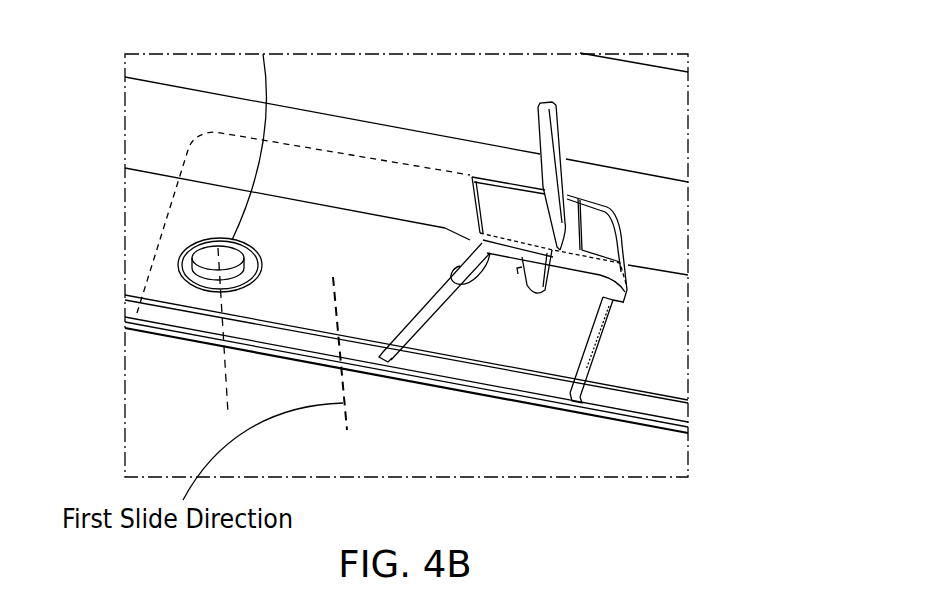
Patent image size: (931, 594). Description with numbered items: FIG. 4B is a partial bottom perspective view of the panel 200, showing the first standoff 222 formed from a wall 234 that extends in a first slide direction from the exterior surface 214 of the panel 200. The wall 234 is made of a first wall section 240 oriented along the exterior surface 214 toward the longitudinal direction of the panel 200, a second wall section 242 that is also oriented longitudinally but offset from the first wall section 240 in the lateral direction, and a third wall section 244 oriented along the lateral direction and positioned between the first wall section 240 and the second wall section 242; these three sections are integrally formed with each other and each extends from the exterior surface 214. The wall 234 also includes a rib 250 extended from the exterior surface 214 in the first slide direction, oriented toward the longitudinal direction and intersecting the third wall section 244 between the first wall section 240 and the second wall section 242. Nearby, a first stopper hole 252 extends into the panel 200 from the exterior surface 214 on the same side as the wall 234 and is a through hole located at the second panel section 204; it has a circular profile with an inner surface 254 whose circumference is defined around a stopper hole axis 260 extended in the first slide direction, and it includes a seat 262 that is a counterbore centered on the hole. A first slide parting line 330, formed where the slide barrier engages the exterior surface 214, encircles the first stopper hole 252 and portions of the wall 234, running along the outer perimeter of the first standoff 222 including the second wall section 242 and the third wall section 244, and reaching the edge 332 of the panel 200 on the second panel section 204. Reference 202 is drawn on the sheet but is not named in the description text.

The panel 200 is at (620, 70).
The plate edge 202 is at (685, 62).
The second panel section 204 is at (677, 417).
The exterior surface 214 is at (663, 368).
The first standoff 222 is at (597, 230).
The wall 234 is at (607, 252).
The first wall section 240 is at (463, 225).
The second wall section 242 is at (597, 343).
The third wall section 244 is at (580, 223).
The rib 250 is at (547, 133).
The first stopper hole 252 is at (202, 278).
The inner surface 254 is at (217, 283).
The stopper hole axis 260 is at (223, 363).
The seat 262 is at (187, 262).
The first slide parting line 330 is at (367, 155).
The edge 332 is at (642, 427).